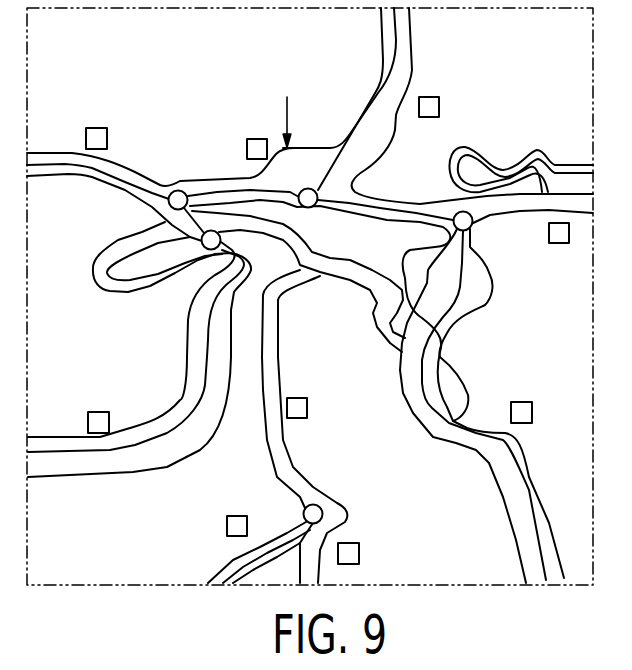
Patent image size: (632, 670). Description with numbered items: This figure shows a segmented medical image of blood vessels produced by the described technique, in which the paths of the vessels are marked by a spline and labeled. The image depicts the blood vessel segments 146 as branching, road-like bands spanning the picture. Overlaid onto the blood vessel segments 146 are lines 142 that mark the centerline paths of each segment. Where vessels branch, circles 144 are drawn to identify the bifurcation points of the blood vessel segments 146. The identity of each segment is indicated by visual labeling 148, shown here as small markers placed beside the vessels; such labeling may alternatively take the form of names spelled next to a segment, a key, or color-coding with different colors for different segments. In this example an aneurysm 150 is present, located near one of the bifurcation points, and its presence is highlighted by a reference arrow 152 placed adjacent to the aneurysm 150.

The lines 142 is at (399, 72).
The circles 144 is at (183, 190).
The blood vessel segments 146 is at (186, 313).
The visual labeling 148 is at (98, 128).
The aneurysm 150 is at (296, 160).
The reference arrow 152 is at (287, 117).